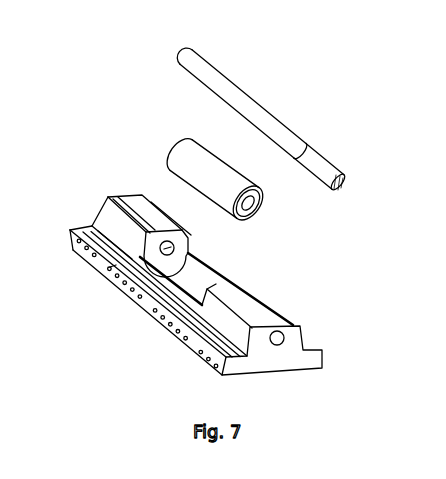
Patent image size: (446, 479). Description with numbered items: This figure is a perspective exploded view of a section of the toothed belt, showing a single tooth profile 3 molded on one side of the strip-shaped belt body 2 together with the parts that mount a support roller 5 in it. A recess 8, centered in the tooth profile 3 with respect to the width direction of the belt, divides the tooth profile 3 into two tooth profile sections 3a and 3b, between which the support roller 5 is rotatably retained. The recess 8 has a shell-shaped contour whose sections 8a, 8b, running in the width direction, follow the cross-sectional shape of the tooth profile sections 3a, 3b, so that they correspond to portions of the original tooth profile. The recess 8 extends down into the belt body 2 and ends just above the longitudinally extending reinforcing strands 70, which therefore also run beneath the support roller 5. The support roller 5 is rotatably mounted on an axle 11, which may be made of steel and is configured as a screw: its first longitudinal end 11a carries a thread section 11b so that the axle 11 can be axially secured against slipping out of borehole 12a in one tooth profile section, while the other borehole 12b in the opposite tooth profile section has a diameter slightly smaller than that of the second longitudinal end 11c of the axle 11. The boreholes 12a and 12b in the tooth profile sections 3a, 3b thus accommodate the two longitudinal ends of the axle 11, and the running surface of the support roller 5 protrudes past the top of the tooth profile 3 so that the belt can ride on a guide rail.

The belt body 2 is at (312, 373).
The tooth profile 3 is at (100, 216).
The tooth profile section 3a is at (264, 312).
The tooth profile section 3b is at (140, 212).
The support roller 5 is at (202, 163).
The recess 8 is at (192, 278).
The section of recess 8a is at (152, 302).
The section of recess 8b is at (240, 283).
The axle 11 is at (280, 121).
The first longitudinal end 11a is at (338, 165).
The thread section 11b is at (316, 167).
The second longitudinal end 11c is at (222, 61).
The borehole 12a is at (274, 343).
The borehole 12b is at (115, 266).
The reinforcing strands 70 is at (177, 333).